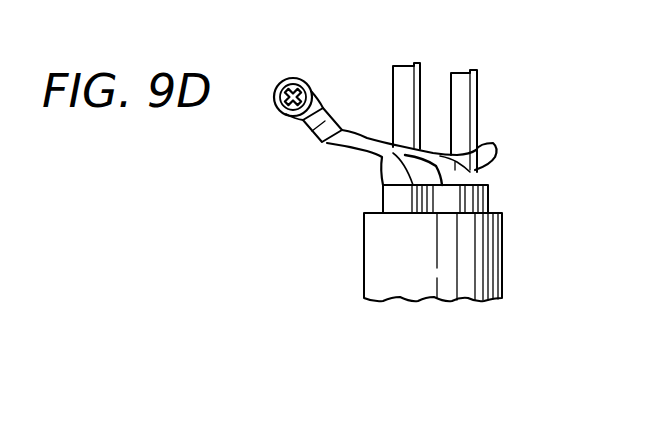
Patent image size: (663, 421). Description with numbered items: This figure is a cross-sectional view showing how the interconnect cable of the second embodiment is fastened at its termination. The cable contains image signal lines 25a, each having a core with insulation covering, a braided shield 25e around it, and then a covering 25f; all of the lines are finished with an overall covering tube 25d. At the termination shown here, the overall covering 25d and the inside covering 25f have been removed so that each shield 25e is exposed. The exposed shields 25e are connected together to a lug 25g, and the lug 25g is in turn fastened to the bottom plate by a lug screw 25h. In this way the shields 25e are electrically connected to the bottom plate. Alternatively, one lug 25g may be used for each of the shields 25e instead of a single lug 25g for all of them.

The image signal lines 25a is at (407, 98).
The overall covering tube 25d is at (375, 244).
The braided shield 25e is at (465, 156).
The covering 25f is at (420, 213).
The lug 25g is at (319, 131).
The lug screw 25h is at (322, 71).